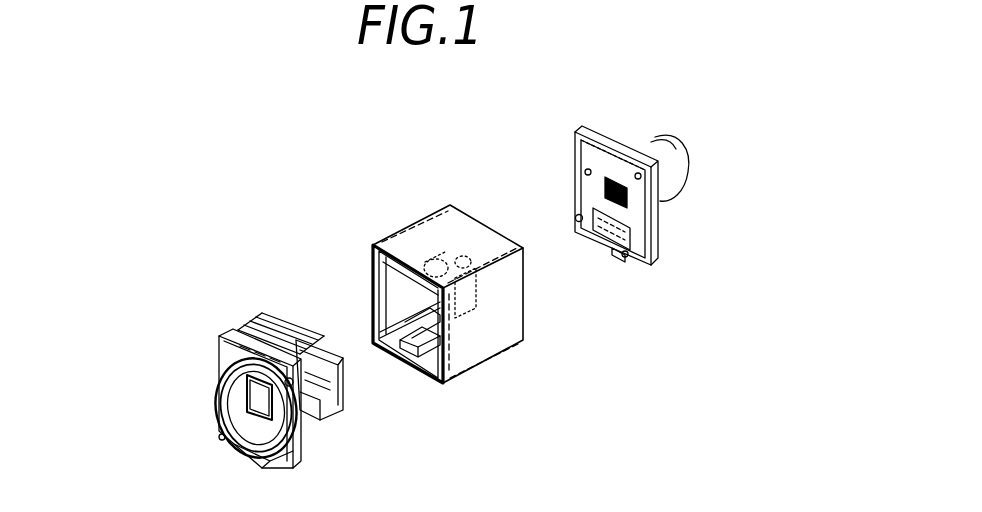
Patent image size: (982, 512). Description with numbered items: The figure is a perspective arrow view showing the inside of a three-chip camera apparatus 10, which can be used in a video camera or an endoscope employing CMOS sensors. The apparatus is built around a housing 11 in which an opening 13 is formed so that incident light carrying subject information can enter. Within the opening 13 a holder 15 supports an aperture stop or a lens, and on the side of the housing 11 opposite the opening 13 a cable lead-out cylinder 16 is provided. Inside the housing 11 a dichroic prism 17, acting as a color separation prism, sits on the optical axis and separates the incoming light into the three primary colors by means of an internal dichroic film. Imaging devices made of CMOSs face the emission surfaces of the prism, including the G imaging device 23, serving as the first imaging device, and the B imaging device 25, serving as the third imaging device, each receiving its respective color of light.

The three-chip camera apparatus 10 is at (366, 192).
The housing 11 is at (507, 322).
The opening 13 is at (248, 393).
The holder 15 is at (217, 373).
The cable lead-out cylinder 16 is at (653, 138).
The dichroic prism 17 is at (370, 409).
The G imaging device 23 is at (312, 340).
The B imaging device 25 is at (255, 333).